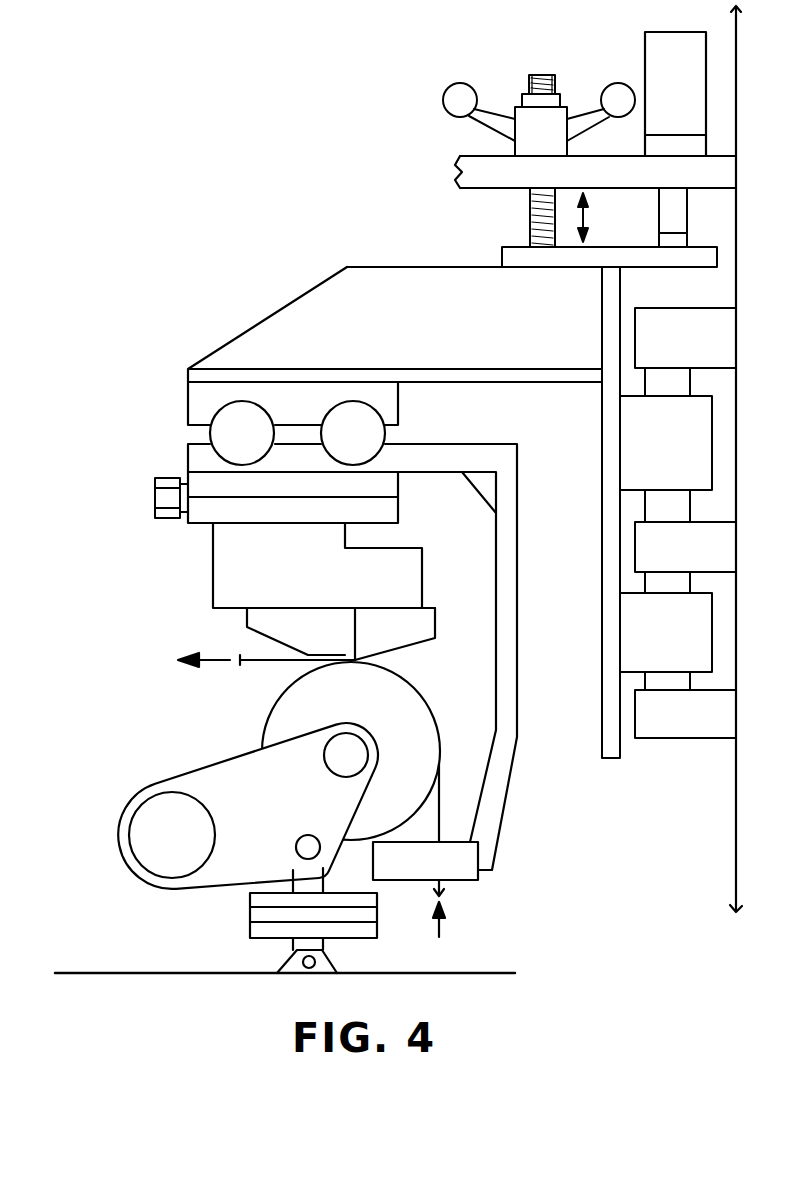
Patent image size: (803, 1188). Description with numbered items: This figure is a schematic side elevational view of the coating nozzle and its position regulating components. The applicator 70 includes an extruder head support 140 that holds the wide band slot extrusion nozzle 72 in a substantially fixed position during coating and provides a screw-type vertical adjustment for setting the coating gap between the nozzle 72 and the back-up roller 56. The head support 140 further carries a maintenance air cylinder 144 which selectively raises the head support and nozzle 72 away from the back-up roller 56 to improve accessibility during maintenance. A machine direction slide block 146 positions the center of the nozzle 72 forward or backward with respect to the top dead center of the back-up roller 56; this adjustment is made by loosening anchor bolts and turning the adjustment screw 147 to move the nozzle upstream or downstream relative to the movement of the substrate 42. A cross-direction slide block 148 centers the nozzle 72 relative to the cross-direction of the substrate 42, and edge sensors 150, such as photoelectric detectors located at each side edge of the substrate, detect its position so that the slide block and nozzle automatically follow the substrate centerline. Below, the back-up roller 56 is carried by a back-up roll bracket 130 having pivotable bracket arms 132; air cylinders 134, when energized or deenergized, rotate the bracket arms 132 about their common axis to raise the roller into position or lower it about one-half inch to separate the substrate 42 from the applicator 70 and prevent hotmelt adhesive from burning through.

The maintenance air cylinder 144 is at (660, 59).
The extruder head support 140 is at (318, 303).
The cross-direction slide block 148 is at (195, 403).
The machine direction slide block 146 is at (193, 457).
The adjustment screw 147 is at (150, 497).
The applicator 70 is at (225, 570).
The slot extrusion nozzle 72 is at (260, 622).
The substrate 42 is at (262, 666).
The back-up roller 56 is at (415, 703).
The back-up roll bracket 130 is at (200, 777).
The bracket arms 132 is at (276, 821).
The edge sensors 150 is at (441, 874).
The air cylinders 134 is at (260, 936).